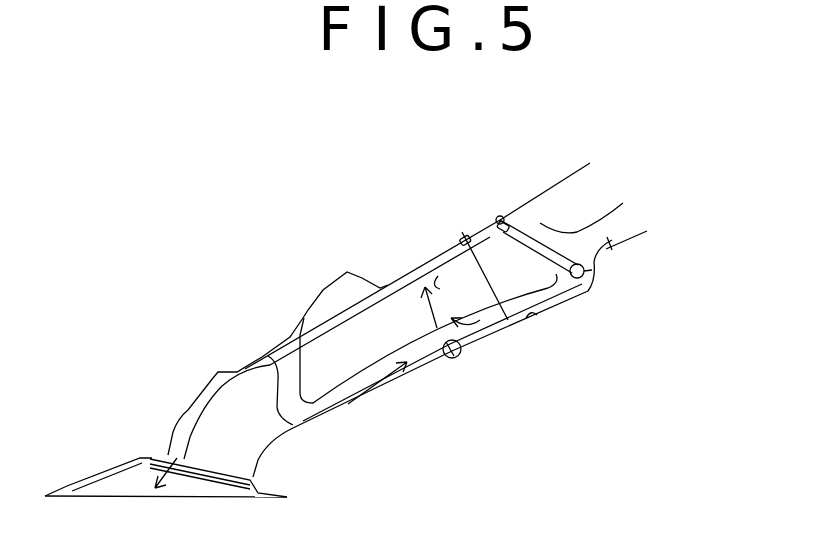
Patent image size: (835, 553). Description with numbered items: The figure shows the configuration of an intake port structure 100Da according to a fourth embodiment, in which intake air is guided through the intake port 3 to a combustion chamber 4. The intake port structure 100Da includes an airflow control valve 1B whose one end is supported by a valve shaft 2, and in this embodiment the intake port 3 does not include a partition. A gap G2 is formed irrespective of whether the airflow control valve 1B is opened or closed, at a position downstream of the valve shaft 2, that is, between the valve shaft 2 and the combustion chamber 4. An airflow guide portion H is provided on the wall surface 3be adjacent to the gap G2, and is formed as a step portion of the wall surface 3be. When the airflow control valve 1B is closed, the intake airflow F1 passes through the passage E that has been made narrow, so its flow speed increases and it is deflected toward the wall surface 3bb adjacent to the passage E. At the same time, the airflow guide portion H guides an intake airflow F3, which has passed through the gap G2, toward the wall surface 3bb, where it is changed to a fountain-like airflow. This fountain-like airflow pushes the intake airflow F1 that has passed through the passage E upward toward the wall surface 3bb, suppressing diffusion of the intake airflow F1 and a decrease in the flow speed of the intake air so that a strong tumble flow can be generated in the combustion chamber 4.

The intake port structure 100Da is at (690, 170).
The airflow control valve 1B is at (541, 235).
The valve shaft 2 is at (587, 300).
The intake port 3 is at (308, 310).
The wall surface 3bb is at (462, 232).
The wall surface 3be is at (537, 318).
The combustion chamber 4 is at (118, 479).
The passage E is at (503, 213).
The intake airflow F1 is at (605, 213).
The intake airflow F3 is at (618, 250).
The gap G2 is at (593, 290).
The airflow guide portion H is at (458, 358).